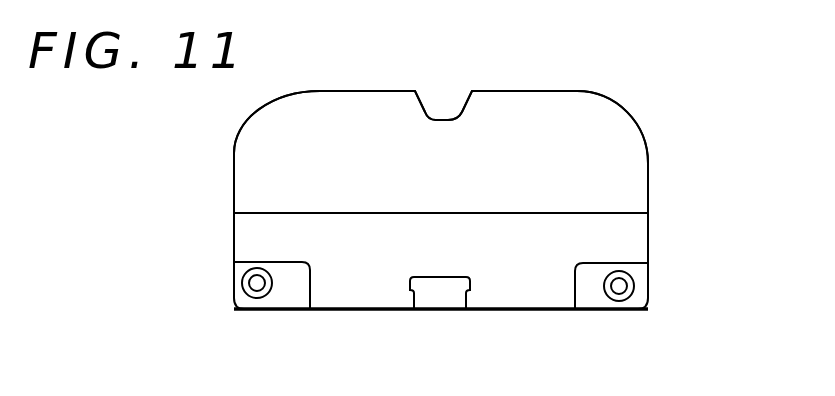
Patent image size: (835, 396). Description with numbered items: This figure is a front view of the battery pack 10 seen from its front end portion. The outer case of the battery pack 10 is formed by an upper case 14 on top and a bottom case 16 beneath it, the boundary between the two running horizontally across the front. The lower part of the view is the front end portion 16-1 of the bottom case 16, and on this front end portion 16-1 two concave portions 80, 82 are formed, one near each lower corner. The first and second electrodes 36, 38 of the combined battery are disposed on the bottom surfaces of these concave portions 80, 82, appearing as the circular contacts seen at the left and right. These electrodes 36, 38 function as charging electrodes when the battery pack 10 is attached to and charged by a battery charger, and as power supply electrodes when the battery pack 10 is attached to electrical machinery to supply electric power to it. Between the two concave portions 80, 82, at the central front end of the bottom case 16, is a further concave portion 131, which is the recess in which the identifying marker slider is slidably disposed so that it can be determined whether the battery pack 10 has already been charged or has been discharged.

The battery pack 10 is at (222, 142).
The upper case 14 is at (579, 101).
The bottom case 16 is at (242, 239).
The front end portion 16-1 is at (627, 229).
The first electrode 36 is at (249, 300).
The second electrode 38 is at (622, 305).
The concave portion 80 is at (290, 296).
The concave portion 82 is at (590, 298).
The concave portion 131 is at (432, 298).